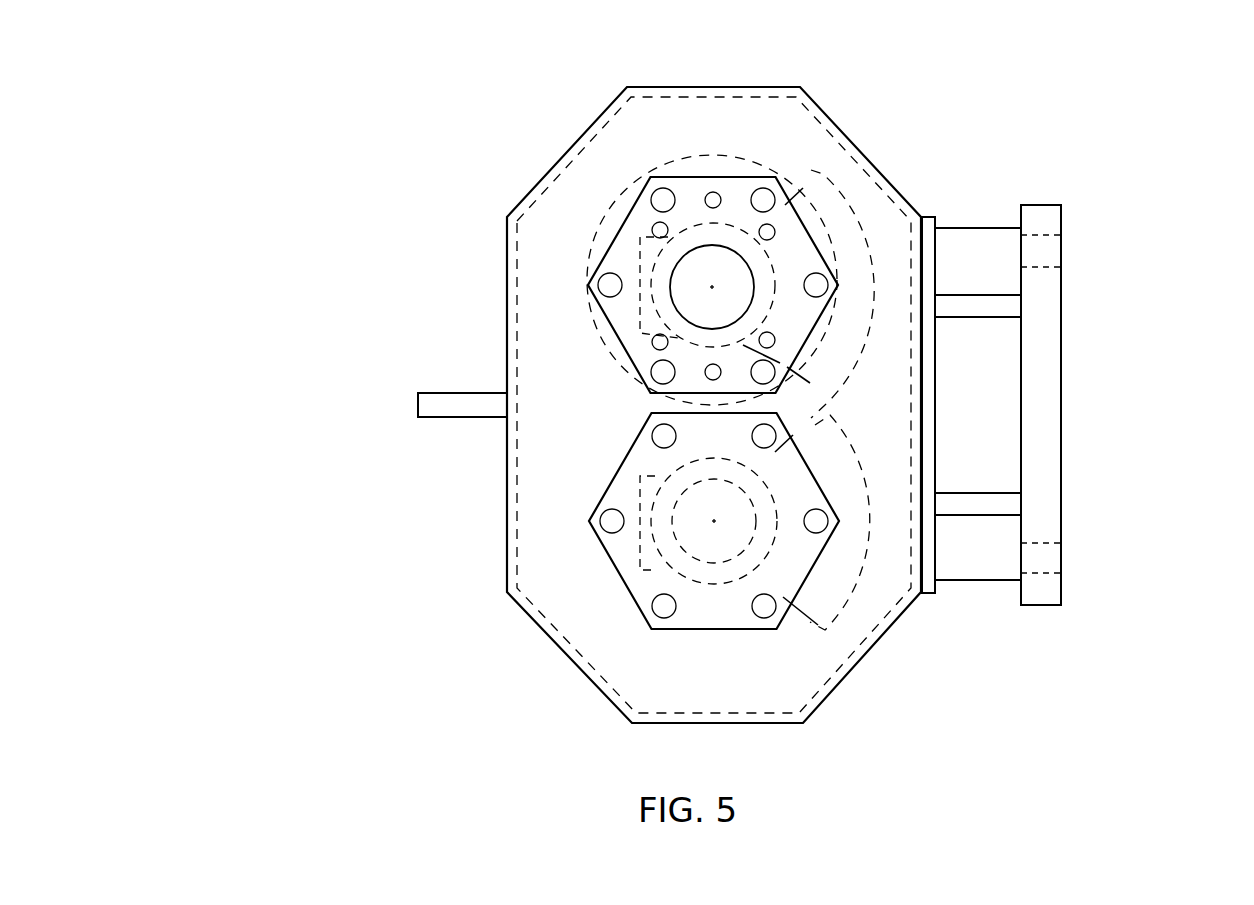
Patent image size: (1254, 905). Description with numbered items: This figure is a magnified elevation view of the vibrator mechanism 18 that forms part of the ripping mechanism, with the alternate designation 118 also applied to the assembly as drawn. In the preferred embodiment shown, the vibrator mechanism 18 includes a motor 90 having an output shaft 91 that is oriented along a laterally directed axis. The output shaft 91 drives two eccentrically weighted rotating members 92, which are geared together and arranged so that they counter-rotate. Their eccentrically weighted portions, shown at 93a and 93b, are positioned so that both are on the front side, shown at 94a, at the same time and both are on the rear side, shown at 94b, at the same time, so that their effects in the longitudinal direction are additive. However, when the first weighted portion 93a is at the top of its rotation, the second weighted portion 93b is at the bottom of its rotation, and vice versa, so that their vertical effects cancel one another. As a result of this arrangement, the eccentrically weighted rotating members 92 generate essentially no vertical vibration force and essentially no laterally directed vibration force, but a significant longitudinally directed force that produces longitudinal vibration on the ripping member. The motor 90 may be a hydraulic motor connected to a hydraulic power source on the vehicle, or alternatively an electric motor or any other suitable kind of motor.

The vibrator mechanism 18 is at (630, 405).
The alternate fluid end assembly 118 is at (714, 405).
The motor 90 is at (680, 157).
The output shaft 91 is at (692, 280).
The eccentrically weighted rotating members 92 is at (707, 222).
The first weighted portion 93a is at (843, 223).
The second weighted portion 93b is at (843, 582).
The front side 94a is at (621, 511).
The rear side 94b is at (1073, 405).